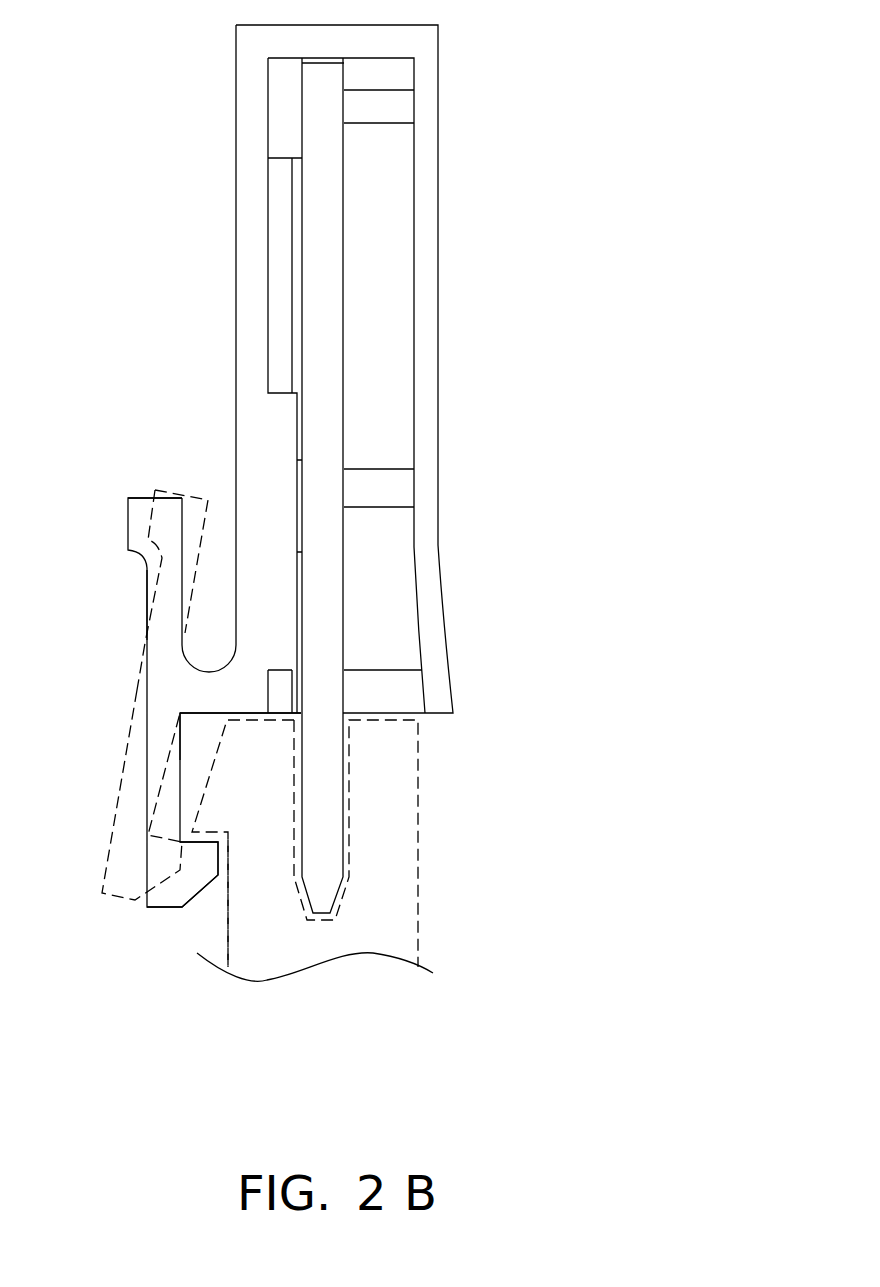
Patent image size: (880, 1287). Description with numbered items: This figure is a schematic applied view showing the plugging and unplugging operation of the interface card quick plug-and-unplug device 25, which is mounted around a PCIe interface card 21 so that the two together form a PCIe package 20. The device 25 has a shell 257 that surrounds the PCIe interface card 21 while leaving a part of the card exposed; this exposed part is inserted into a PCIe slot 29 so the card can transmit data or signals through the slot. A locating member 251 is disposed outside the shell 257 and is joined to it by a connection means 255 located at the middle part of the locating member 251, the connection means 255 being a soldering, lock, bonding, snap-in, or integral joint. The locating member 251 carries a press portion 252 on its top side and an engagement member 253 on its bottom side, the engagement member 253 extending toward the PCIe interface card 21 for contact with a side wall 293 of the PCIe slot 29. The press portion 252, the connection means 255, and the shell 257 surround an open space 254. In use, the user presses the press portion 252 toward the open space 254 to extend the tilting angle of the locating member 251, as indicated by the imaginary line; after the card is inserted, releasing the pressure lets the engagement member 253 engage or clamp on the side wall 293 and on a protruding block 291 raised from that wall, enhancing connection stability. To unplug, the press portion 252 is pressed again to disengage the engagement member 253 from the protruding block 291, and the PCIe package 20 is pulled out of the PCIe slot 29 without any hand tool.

The PCIe package 20 is at (70, 128).
The shell 257 is at (428, 245).
The PCIe interface card 21 is at (332, 555).
The interface card quick plug-and-unplug device 25 is at (118, 672).
The locating member 251 is at (150, 587).
The press portion 252 is at (133, 525).
The engagement member 253 is at (190, 872).
The open space 254 is at (218, 588).
The connection means 255 is at (202, 693).
The PCIe slot 29 is at (425, 840).
The protruding block 291 is at (202, 817).
The side wall 293 is at (227, 927).